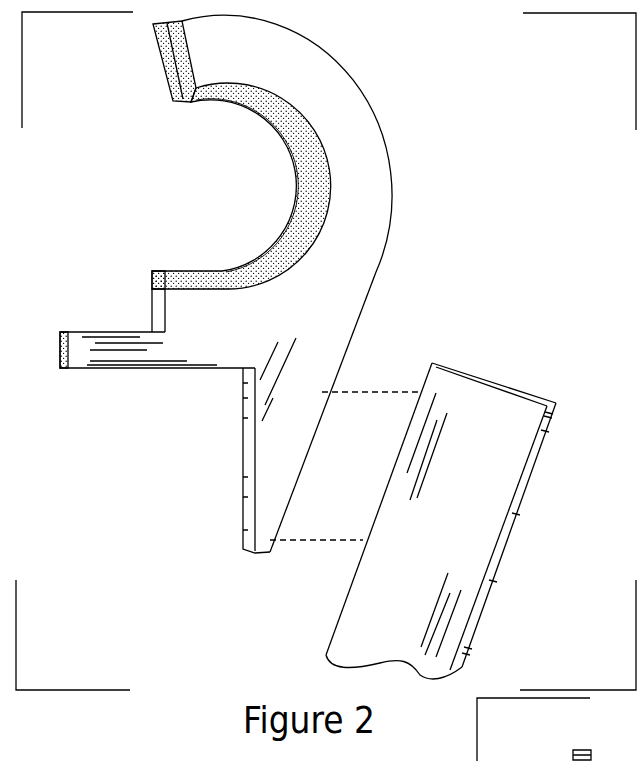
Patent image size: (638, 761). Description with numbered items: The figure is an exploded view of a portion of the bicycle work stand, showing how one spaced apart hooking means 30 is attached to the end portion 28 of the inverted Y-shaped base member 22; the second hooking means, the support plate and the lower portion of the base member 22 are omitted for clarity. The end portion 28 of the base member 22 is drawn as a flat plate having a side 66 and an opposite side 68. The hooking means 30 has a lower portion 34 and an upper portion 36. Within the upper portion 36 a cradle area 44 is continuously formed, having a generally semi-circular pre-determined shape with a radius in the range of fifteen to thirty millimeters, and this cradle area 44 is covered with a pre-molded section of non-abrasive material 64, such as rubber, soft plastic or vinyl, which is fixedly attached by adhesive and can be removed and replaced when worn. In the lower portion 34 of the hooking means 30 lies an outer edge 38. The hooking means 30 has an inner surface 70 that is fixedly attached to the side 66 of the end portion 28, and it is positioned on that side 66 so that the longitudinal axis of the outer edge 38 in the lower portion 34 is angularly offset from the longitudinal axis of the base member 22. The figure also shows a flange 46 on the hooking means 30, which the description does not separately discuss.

The inverted Y-shaped base member 22 is at (448, 672).
The end portion 28 is at (452, 525).
The spaced apart hooking means 30 is at (159, 64).
The lower portion 34 is at (302, 423).
The upper portion 36 is at (364, 195).
The outer edge 38 is at (340, 367).
The cradle area 44 is at (288, 242).
The flange 46 is at (92, 363).
The non-abrasive material 64 is at (315, 124).
The side 66 is at (423, 384).
The opposite side 68 is at (535, 463).
The inner surface 70 is at (330, 288).